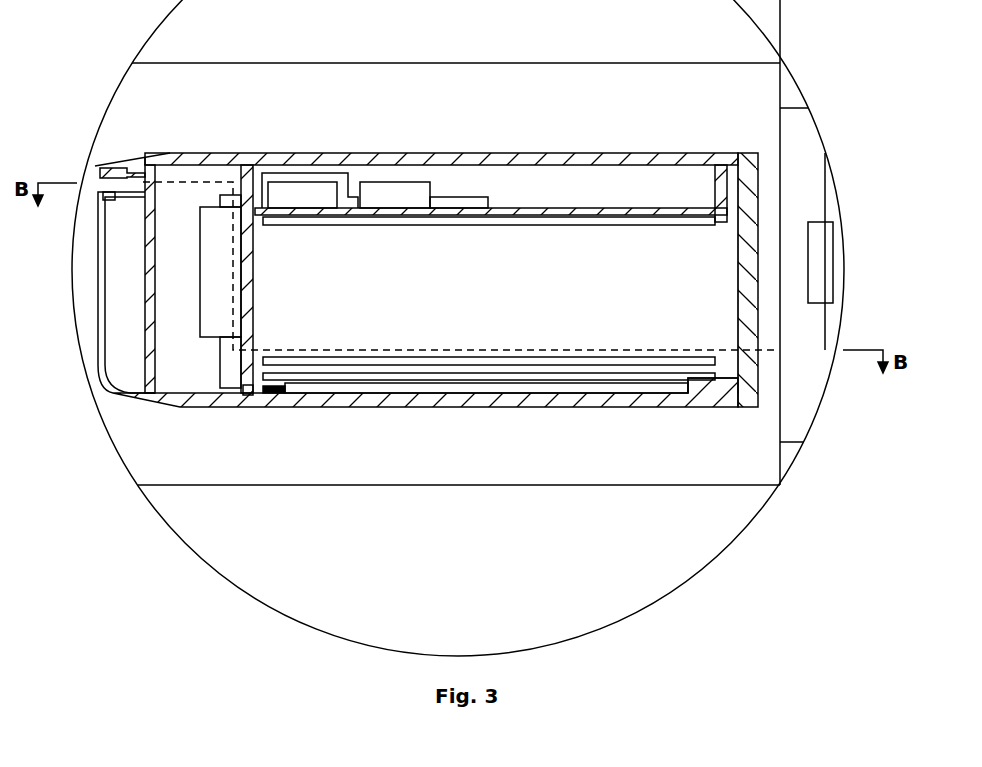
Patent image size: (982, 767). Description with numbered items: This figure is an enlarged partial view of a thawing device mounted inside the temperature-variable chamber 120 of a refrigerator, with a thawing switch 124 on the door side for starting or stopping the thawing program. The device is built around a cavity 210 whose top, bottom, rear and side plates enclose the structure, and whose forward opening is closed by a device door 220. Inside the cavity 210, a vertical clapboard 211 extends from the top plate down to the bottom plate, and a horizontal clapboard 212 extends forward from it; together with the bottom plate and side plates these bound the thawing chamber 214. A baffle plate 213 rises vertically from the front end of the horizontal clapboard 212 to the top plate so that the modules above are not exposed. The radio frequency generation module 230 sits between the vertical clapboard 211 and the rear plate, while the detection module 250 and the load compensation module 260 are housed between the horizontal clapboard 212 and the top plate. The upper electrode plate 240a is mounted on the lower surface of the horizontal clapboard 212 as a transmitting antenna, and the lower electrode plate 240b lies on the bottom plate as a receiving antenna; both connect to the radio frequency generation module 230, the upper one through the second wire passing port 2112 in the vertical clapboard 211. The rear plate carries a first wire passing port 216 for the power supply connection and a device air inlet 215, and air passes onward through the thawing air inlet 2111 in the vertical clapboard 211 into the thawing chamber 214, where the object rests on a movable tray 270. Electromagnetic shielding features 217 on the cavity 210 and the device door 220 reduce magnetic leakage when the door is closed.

The temperature-variable chamber 120 is at (770, 220).
The thawing switch 124 is at (818, 262).
The cavity 210 is at (482, 160).
The vertical clapboard 211 is at (251, 273).
The thawing air inlet 2111 is at (245, 352).
The second wire passing port 2112 is at (247, 190).
The horizontal clapboard 212 is at (528, 211).
The baffle plate 213 is at (720, 172).
The thawing chamber 214 is at (715, 337).
The device air inlet 215 is at (150, 190).
The first wire passing port 216 is at (152, 275).
The electromagnetic shielding feature 217 is at (585, 162).
The device door 220 is at (748, 368).
The radio frequency generation module 230 is at (225, 332).
The upper electrode plate 240a is at (605, 221).
The lower electrode plate 240b is at (645, 377).
The detection module 250 is at (309, 195).
The load compensation module 260 is at (387, 195).
The tray 270 is at (545, 362).